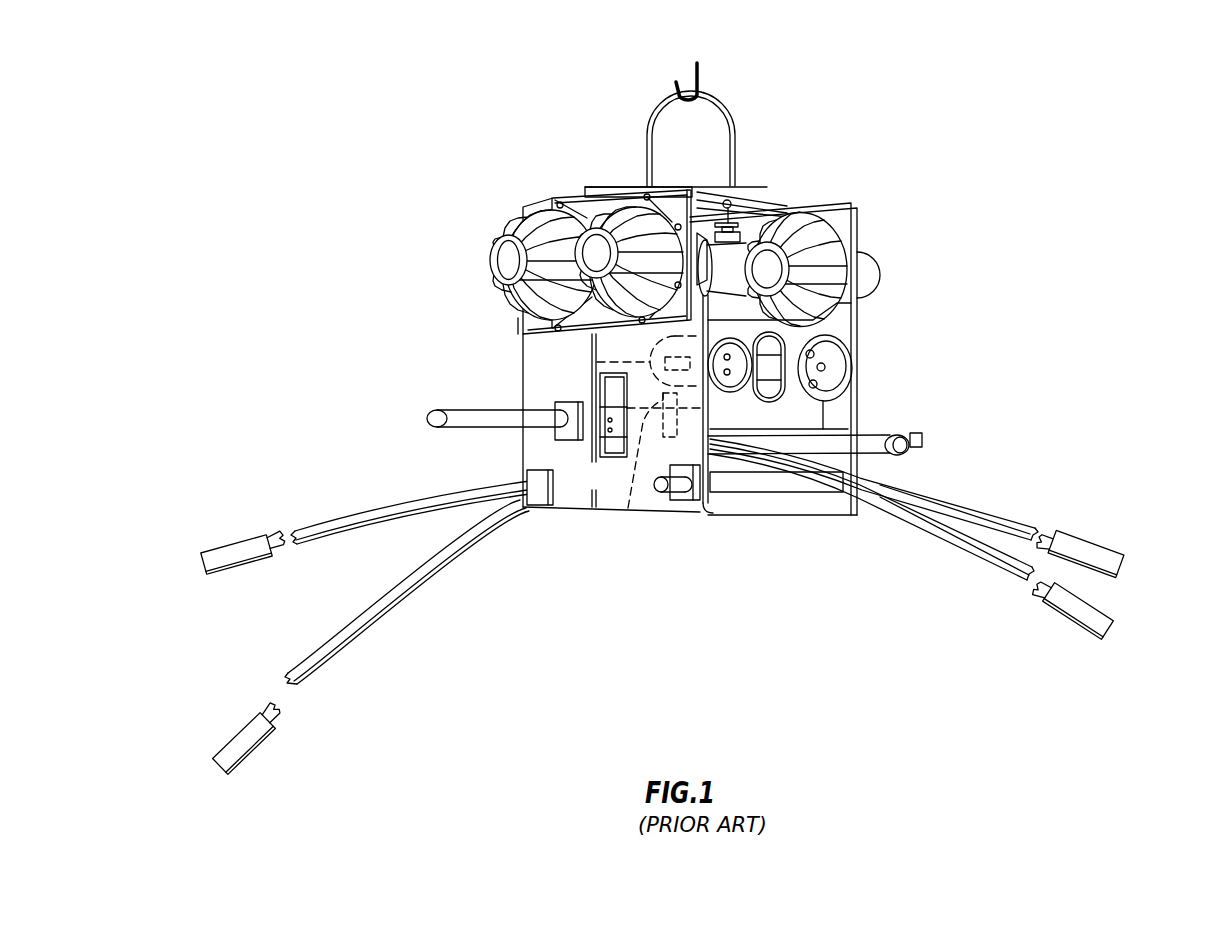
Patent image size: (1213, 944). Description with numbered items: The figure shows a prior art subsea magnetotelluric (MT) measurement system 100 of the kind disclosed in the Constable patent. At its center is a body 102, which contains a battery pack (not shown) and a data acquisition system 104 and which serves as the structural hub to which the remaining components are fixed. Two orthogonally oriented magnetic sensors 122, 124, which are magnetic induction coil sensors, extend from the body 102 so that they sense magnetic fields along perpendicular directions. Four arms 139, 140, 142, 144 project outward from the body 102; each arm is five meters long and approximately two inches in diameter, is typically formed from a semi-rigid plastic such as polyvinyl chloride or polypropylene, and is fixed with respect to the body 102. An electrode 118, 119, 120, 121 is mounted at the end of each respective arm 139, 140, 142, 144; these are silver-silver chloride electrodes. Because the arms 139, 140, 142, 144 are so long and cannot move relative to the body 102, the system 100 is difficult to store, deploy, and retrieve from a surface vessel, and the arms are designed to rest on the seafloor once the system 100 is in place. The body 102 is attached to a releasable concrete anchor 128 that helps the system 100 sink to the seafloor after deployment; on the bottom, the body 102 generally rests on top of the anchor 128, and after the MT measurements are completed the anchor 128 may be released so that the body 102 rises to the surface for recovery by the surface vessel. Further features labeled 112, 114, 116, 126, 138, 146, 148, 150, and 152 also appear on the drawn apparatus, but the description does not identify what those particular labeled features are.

The magnetotelluric measurement system 100 is at (1082, 166).
The body 102 is at (856, 207).
The data acquisition system 104 is at (827, 350).
The connector face 112 is at (847, 363).
The power outlet 114 is at (745, 392).
The control panel 116 is at (593, 364).
The electrode 118 is at (227, 578).
The electrode 119 is at (1090, 535).
The electrode 120 is at (1087, 637).
The electrode 121 is at (270, 733).
The magnetic sensor 122 is at (457, 424).
The magnetic sensor 124 is at (887, 458).
The fan 126 is at (627, 217).
The releasable concrete anchor 128 is at (670, 513).
The housing 138 is at (612, 500).
The arm 139 is at (347, 513).
The arm 140 is at (1017, 517).
The arm 142 is at (437, 568).
The arm 144 is at (737, 197).
The switch 146 is at (629, 462).
The internal component 148 is at (656, 354).
The mounting bracket 150 is at (457, 408).
The handle rail 152 is at (867, 438).